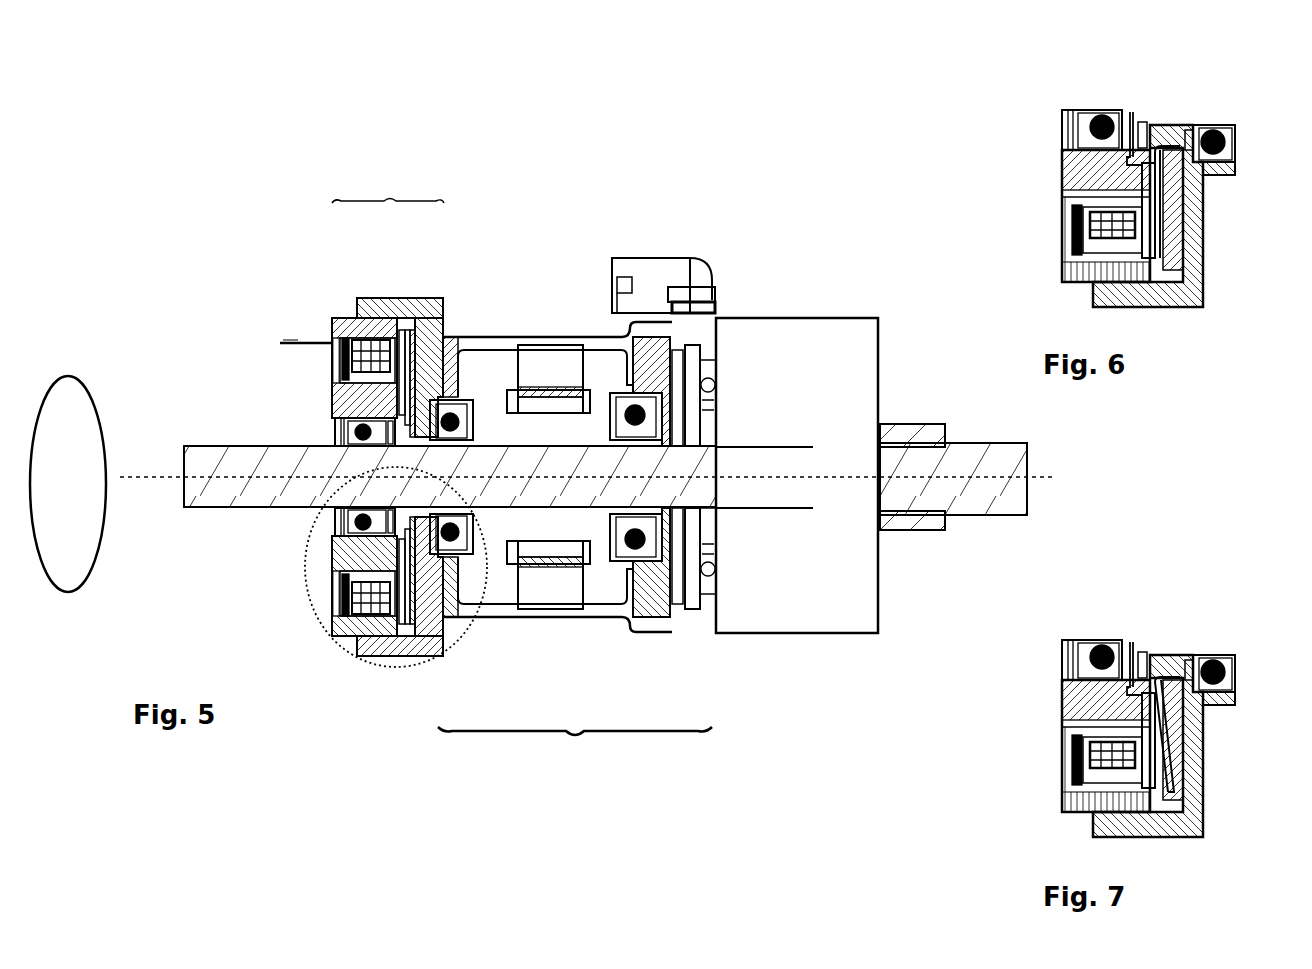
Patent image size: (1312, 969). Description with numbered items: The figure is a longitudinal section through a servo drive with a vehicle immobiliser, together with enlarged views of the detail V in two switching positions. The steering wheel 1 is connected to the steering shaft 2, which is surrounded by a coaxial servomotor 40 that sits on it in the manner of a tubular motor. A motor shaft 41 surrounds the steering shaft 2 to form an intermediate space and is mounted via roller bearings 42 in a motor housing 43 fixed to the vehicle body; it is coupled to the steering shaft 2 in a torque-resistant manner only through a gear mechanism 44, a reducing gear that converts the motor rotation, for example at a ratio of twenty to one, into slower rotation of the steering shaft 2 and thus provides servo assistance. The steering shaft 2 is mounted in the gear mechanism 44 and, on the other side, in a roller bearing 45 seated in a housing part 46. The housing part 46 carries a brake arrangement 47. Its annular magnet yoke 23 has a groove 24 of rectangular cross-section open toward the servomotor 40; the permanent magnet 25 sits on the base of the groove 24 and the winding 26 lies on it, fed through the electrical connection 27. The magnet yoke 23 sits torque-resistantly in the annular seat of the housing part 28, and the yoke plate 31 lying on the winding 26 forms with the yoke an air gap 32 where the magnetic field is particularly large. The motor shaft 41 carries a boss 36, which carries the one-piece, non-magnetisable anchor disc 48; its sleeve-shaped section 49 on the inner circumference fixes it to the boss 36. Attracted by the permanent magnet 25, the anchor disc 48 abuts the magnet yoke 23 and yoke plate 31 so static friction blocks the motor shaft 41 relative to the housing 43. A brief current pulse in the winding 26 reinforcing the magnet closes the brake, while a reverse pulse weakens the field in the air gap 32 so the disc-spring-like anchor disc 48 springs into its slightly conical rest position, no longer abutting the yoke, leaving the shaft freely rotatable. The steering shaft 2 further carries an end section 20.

In FIG. 5, the steering wheel 1 is at (90, 398).
In FIG. 5, the steering shaft 2 is at (262, 492).
In FIG. 5, the shaft end 20 is at (1038, 476).
In FIG. 5, the magnet yoke 23 is at (340, 325).
In FIG. 6, the magnet yoke 23 is at (1075, 283).
In FIG. 7, the magnet yoke 23 is at (1075, 813).
In FIG. 5, the groove 24 is at (362, 315).
In FIG. 5, the permanent magnet 25 is at (338, 604).
In FIG. 6, the permanent magnet 25 is at (1075, 238).
In FIG. 7, the permanent magnet 25 is at (1075, 755).
In FIG. 5, the winding 26 is at (372, 340).
In FIG. 6, the winding 26 is at (1090, 220).
In FIG. 7, the winding 26 is at (1090, 760).
In FIG. 5, the electrical connection 27 is at (298, 341).
In FIG. 5, the housing part 28 is at (418, 660).
In FIG. 6, the housing part 28 is at (1138, 310).
In FIG. 5, the yoke plate 31 is at (455, 645).
In FIG. 6, the yoke plate 31 is at (1158, 205).
In FIG. 7, the yoke plate 31 is at (1142, 700).
In FIG. 5, the air gap 32 is at (400, 330).
In FIG. 6, the air gap 32 is at (1185, 310).
In FIG. 7, the air gap 32 is at (1178, 838).
In FIG. 5, the boss 36 is at (492, 614).
In FIG. 6, the boss 36 is at (1140, 118).
In FIG. 7, the boss 36 is at (1145, 652).
In FIG. 5, the servomotor 40 is at (575, 748).
In FIG. 5, the motor shaft 41 is at (520, 388).
In FIG. 5, the roller bearings 42 is at (466, 405).
In FIG. 6, the roller bearings 42 is at (1218, 122).
In FIG. 5, the motor housing 43 is at (420, 312).
In FIG. 6, the motor housing 43 is at (1210, 276).
In FIG. 5, the gear mechanism 44 is at (788, 338).
In FIG. 5, the roller bearing 45 is at (336, 425).
In FIG. 6, the roller bearing 45 is at (1090, 110).
In FIG. 5, the housing part 46 is at (336, 398).
In FIG. 6, the housing part 46 is at (1062, 162).
In FIG. 5, the brake arrangement 47 is at (388, 185).
In FIG. 5, the anchor disc 48 is at (445, 320).
In FIG. 6, the anchor disc 48 is at (1165, 170).
In FIG. 7, the anchor disc 48 is at (1168, 740).
In FIG. 6, the sleeve-shaped section 49 is at (1168, 140).
In FIG. 5, the detail V is at (362, 663).